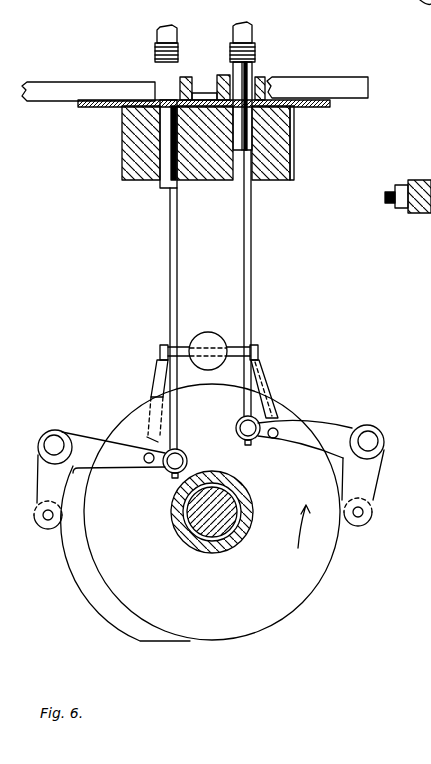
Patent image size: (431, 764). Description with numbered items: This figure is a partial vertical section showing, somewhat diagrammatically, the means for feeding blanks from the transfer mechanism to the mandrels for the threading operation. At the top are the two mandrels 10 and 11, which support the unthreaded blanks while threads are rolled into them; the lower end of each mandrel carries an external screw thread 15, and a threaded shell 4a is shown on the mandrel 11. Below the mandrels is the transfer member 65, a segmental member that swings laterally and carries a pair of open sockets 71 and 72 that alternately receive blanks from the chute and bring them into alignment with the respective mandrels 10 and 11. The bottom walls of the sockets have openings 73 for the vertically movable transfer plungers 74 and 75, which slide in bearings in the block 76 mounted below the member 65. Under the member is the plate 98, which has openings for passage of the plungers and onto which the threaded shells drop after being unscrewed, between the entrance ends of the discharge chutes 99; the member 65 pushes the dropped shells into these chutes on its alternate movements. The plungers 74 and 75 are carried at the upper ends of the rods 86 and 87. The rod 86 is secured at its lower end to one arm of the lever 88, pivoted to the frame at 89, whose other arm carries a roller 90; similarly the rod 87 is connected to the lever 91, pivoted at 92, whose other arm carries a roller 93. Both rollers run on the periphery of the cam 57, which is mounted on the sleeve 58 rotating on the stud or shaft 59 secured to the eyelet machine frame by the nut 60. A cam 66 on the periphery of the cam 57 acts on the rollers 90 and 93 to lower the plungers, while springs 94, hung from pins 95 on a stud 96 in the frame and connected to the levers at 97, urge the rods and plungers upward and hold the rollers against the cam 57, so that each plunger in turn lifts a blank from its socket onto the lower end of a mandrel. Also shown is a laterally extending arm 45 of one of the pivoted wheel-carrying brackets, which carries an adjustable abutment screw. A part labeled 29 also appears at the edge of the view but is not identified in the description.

The mandrel 10 is at (170, 33).
The mandrel 11 is at (246, 30).
The external screw thread 15 is at (155, 50).
The threaded shell 4a is at (256, 50).
The lever 29 is at (417, 8).
The laterally extending arm 45 is at (415, 213).
The cam 57 is at (254, 633).
The sleeve 58 is at (209, 552).
The stud or shaft 59 is at (196, 530).
The nut 60 is at (425, 641).
The transfer device 65 is at (180, 88).
The cam 66 is at (104, 602).
The socket 71 is at (201, 76).
The socket 72 is at (265, 76).
The opening 73 is at (208, 92).
The transfer plunger 74 is at (172, 152).
The transfer plunger 75 is at (258, 141).
The block 76 is at (272, 183).
The rod 86 is at (178, 270).
The rod 87 is at (252, 270).
The lever 88 is at (100, 436).
The pivot 89 is at (52, 430).
The roller 90 is at (46, 529).
The lever 91 is at (330, 420).
The pivot 92 is at (385, 441).
The roller 93 is at (373, 515).
The spring 94 is at (157, 380).
The pin 95 is at (186, 346).
The stud 96 is at (210, 333).
The spring connection 97 is at (148, 464).
The plate 98 is at (148, 120).
The discharge chute 99 is at (85, 86).